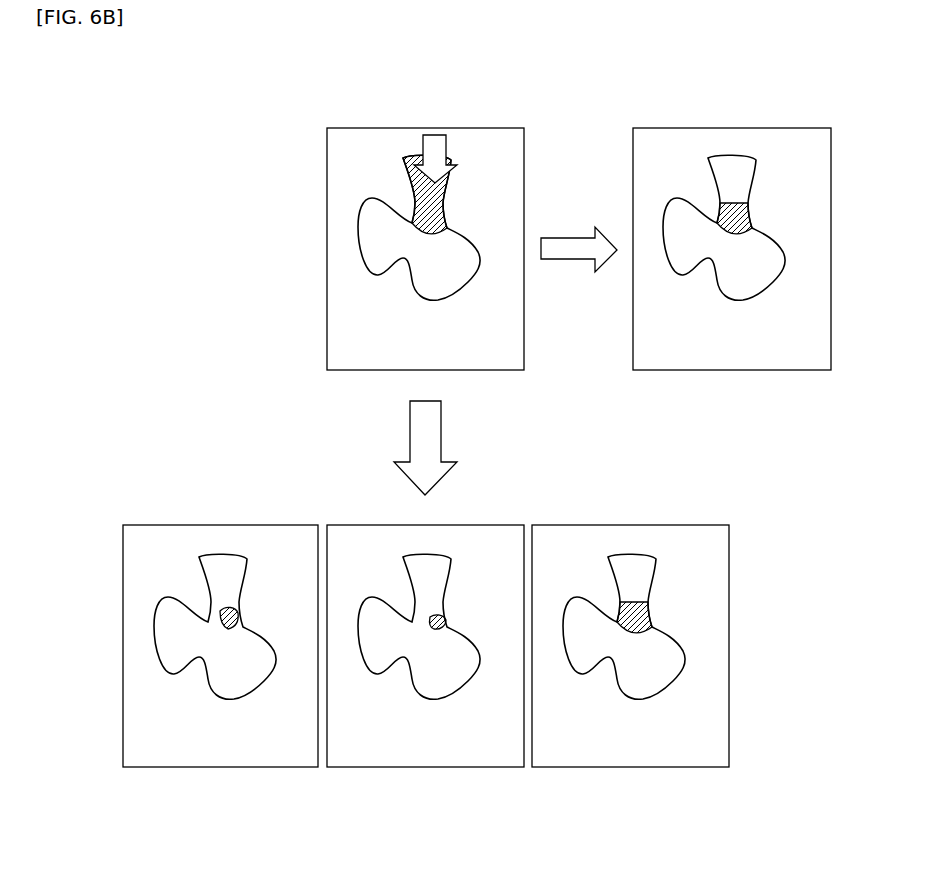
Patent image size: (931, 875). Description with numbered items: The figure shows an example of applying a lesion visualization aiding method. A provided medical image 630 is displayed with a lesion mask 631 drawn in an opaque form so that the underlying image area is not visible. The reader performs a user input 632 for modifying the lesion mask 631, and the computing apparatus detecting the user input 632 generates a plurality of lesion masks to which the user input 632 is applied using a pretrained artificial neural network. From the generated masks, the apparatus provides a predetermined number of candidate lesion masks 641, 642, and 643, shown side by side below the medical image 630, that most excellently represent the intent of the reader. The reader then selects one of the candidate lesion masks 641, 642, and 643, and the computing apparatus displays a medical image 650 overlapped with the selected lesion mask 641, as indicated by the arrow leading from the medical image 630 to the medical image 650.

The medical image 630 is at (412, 218).
The lesion mask 631 is at (382, 238).
The user input 632 is at (434, 147).
The candidate lesion mask 641 is at (220, 768).
The candidate lesion mask 642 is at (425, 768).
The candidate lesion mask 643 is at (628, 768).
The medical image 650 is at (732, 127).